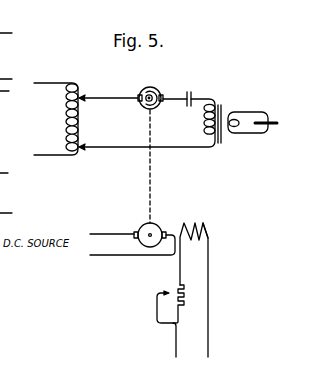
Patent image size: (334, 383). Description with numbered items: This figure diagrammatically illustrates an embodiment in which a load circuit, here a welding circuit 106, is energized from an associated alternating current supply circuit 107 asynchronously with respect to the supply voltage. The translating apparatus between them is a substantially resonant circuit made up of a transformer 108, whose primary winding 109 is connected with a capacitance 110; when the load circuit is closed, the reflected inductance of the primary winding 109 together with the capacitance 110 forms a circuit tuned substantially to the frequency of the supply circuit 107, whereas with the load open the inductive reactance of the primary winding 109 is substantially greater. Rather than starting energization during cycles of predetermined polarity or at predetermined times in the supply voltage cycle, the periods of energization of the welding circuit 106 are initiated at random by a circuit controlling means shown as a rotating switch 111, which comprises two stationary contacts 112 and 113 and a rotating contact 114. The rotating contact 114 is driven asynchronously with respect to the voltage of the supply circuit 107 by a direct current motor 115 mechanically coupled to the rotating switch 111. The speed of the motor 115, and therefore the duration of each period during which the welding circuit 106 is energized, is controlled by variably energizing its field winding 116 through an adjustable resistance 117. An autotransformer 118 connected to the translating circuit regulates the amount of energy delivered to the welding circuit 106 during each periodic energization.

The welding circuit 106 is at (262, 137).
The alternating current supply circuit 107 is at (49, 84).
The transformer 108 is at (224, 147).
The primary winding 109 is at (206, 124).
The capacitance 110 is at (193, 93).
The rotating switch 111 is at (158, 81).
The stationary contact 112 is at (158, 108).
The stationary contact 113 is at (141, 105).
The rotating contact 114 is at (160, 90).
The direct current motor 115 is at (187, 217).
The field winding 116 is at (206, 228).
The adjustable resistance 117 is at (172, 285).
The autotransformer 118 is at (103, 81).